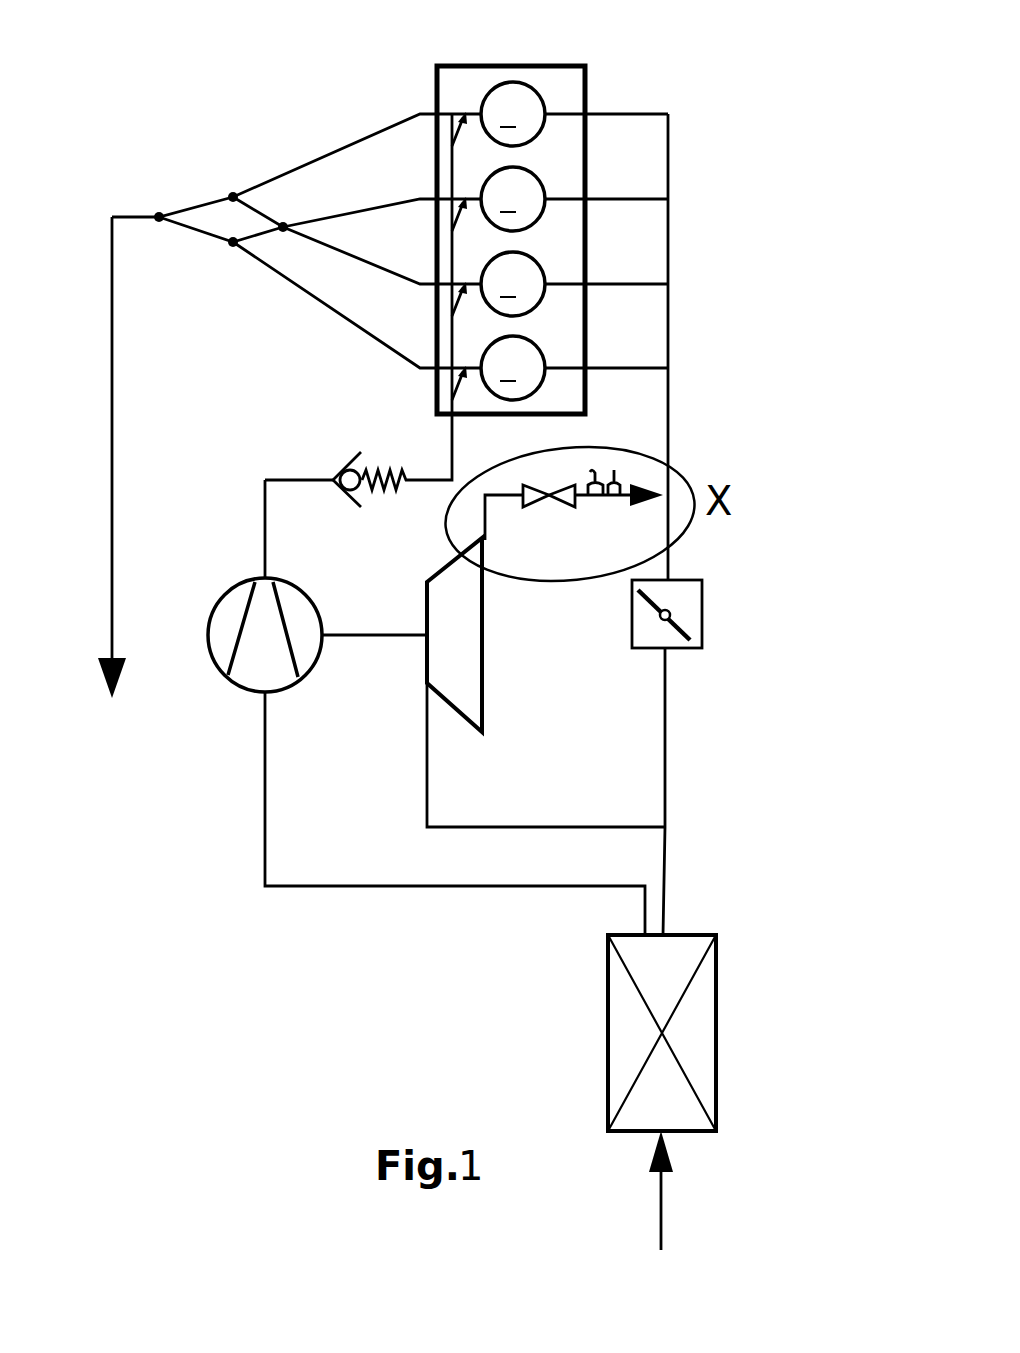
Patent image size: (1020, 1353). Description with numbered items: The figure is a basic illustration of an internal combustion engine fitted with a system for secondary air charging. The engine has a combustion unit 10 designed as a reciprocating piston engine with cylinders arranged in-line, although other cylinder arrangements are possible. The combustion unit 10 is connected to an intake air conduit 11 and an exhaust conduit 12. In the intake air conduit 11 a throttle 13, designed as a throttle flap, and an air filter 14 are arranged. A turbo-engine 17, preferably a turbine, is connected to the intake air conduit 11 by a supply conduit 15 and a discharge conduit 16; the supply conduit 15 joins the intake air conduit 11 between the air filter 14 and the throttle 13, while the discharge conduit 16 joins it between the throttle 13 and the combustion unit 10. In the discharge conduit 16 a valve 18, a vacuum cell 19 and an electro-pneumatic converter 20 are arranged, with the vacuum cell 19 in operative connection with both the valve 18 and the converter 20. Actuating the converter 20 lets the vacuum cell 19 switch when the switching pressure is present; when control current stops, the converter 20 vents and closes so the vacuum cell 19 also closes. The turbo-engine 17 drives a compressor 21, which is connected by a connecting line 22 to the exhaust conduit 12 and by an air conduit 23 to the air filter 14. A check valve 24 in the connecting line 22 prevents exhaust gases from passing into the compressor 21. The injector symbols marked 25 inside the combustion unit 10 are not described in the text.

The combustion unit 10 is at (568, 80).
The intake air conduit 11 is at (668, 250).
The exhaust conduit 12 is at (110, 332).
The throttle 13 is at (705, 616).
The air filter 14 is at (680, 948).
The supply conduit 15 is at (566, 826).
The discharge conduit 16 is at (510, 500).
The turbo-engine 17 is at (483, 672).
The valve 18 is at (562, 507).
The vacuum cell 19 is at (579, 476).
The electro-pneumatic converter 20 is at (628, 478).
The compressor 21 is at (262, 668).
The connecting line 22 is at (450, 452).
The air conduit 23 is at (398, 888).
The check valve 24 is at (345, 470).
The fuel injectors 25 is at (513, 241).